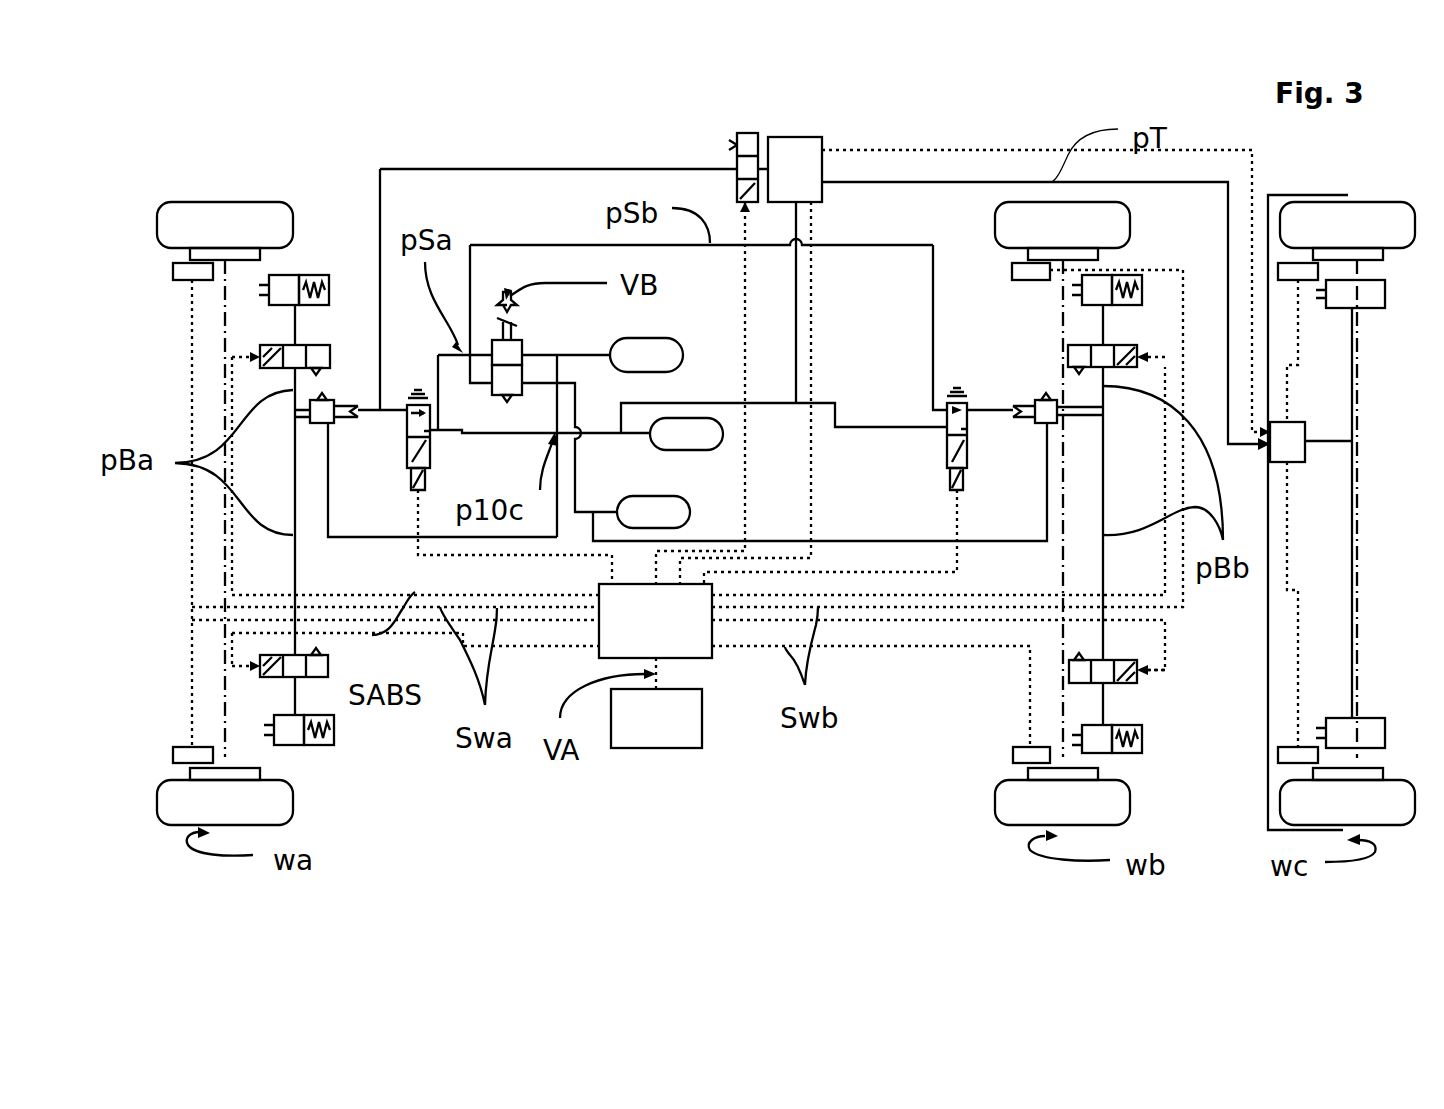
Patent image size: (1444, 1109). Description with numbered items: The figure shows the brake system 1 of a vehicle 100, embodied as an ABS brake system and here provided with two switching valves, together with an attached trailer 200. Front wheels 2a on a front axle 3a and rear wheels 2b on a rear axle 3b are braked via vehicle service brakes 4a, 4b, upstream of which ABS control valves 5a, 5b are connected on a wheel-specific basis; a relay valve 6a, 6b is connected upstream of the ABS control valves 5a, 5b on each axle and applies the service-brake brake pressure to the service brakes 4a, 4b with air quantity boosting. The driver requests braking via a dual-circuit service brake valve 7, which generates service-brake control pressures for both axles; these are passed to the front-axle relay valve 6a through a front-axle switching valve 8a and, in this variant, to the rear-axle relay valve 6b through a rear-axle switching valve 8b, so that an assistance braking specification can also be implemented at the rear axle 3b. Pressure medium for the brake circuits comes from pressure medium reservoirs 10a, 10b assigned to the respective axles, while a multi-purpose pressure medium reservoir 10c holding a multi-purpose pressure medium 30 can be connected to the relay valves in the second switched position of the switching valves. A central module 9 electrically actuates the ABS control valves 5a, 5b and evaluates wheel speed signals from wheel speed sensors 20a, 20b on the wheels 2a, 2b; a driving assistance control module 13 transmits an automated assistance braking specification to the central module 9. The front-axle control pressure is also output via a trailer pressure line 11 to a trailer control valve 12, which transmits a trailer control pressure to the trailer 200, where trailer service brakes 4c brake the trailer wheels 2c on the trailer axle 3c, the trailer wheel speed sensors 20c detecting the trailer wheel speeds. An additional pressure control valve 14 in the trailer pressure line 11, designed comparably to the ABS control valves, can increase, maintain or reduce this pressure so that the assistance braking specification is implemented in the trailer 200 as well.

The brake system 1 is at (908, 128).
The front wheels 2a is at (235, 200).
The rear wheels 2b is at (992, 795).
The trailer wheels 2c is at (1348, 195).
The front axle 3a is at (226, 573).
The rear axle 3b is at (1063, 637).
The trailer axle 3c is at (1362, 492).
The front-axle service brakes 4a is at (297, 274).
The rear-axle service brakes 4b is at (1108, 753).
The trailer service brakes 4c is at (1385, 308).
The front-axle ABS control valves 5a is at (267, 353).
The rear-axle ABS control valves 5b is at (1127, 683).
The front-axle relay valve 6a is at (335, 425).
The rear-axle relay valve 6b is at (1040, 425).
The dual-circuit service brake valve 7 is at (532, 340).
The front-axle switching valve 8a is at (418, 398).
The rear-axle switching valve 8b is at (957, 396).
The central module 9 is at (655, 621).
The front-axle pressure medium reservoir 10a is at (602, 355).
The rear-axle pressure medium reservoir 10b is at (606, 455).
The multi-purpose pressure medium reservoir 10c is at (686, 434).
The trailer pressure line 11 is at (600, 168).
The trailer control valve 12 is at (795, 136).
The driving assistance control module 13 is at (656, 703).
The pressure control valve 14 is at (745, 133).
The front wheel speed sensors 20a is at (172, 270).
The rear wheel speed sensors 20b is at (1013, 755).
The trailer wheel speed sensors 20c is at (1278, 270).
The multi-purpose pressure medium 30 is at (735, 433).
The vehicle 100 is at (500, 778).
The trailer 200 is at (1432, 670).